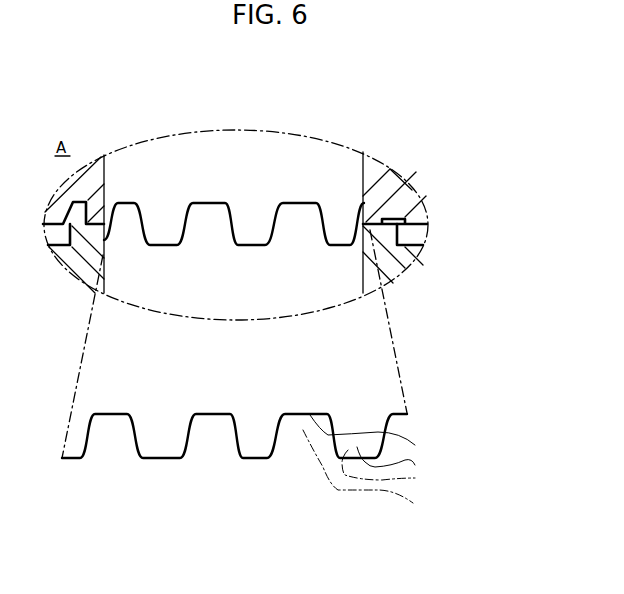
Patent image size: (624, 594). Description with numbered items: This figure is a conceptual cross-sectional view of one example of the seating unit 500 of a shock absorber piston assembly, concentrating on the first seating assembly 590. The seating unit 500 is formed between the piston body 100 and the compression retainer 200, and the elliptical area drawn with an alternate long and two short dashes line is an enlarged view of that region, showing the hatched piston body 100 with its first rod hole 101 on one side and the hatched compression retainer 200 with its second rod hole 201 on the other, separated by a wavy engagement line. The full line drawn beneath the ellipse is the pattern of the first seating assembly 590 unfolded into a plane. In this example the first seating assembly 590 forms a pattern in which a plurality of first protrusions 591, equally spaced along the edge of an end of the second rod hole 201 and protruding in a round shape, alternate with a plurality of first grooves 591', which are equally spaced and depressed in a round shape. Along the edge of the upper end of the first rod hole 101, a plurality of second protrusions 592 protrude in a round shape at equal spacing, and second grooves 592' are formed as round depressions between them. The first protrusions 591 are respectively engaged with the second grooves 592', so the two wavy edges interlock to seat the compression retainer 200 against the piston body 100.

The piston body 100 is at (367, 287).
The first rod hole 101 is at (186, 296).
The compression retainer 200 is at (380, 172).
The second rod hole 201 is at (240, 157).
The seating unit 500 is at (510, 475).
The first seating assembly 590 is at (415, 480).
The first protrusions 591 is at (410, 467).
The first grooves 591' is at (393, 441).
The second protrusions 592 is at (388, 488).
The second grooves 592' is at (411, 483).